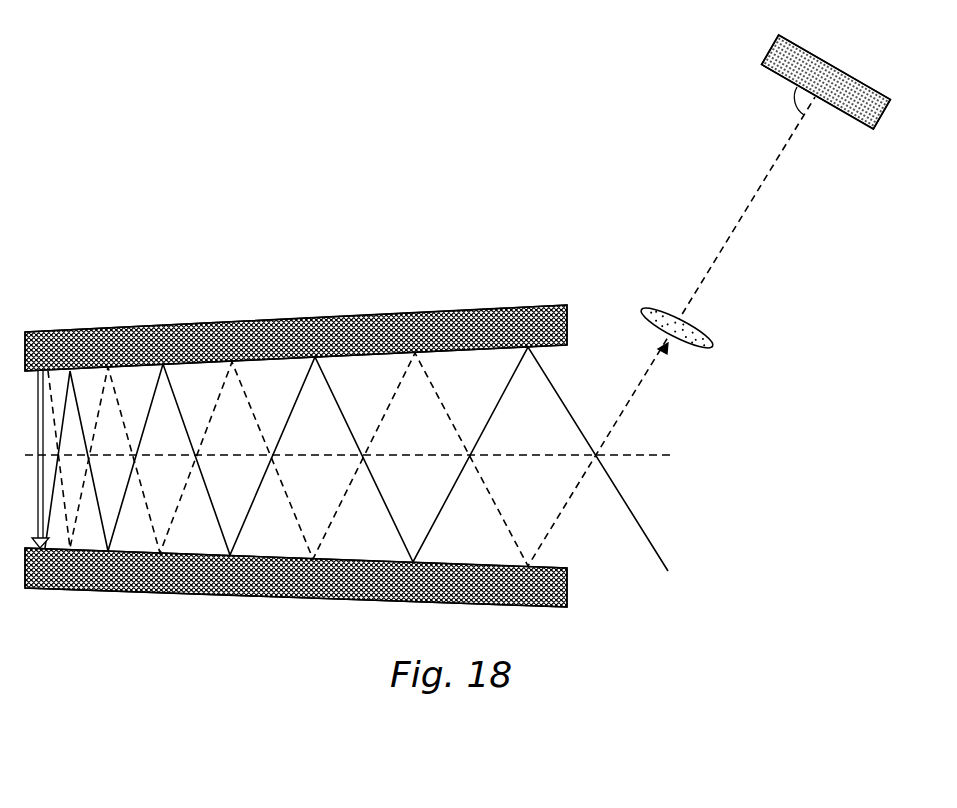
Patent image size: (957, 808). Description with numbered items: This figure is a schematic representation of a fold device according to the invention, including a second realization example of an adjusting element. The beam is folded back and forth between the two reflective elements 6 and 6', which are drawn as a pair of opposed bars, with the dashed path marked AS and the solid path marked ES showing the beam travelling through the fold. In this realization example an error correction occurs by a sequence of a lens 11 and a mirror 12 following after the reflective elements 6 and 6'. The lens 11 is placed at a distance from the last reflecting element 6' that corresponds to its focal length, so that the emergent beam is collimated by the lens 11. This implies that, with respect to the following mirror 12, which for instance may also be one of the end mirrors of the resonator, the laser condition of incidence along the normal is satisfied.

The reflective element 6 is at (296, 326).
The reflective element 6' is at (296, 593).
The lens 11 is at (693, 333).
The mirror 12 is at (799, 63).
The output beam AS is at (431, 331).
The input beam ES is at (360, 459).